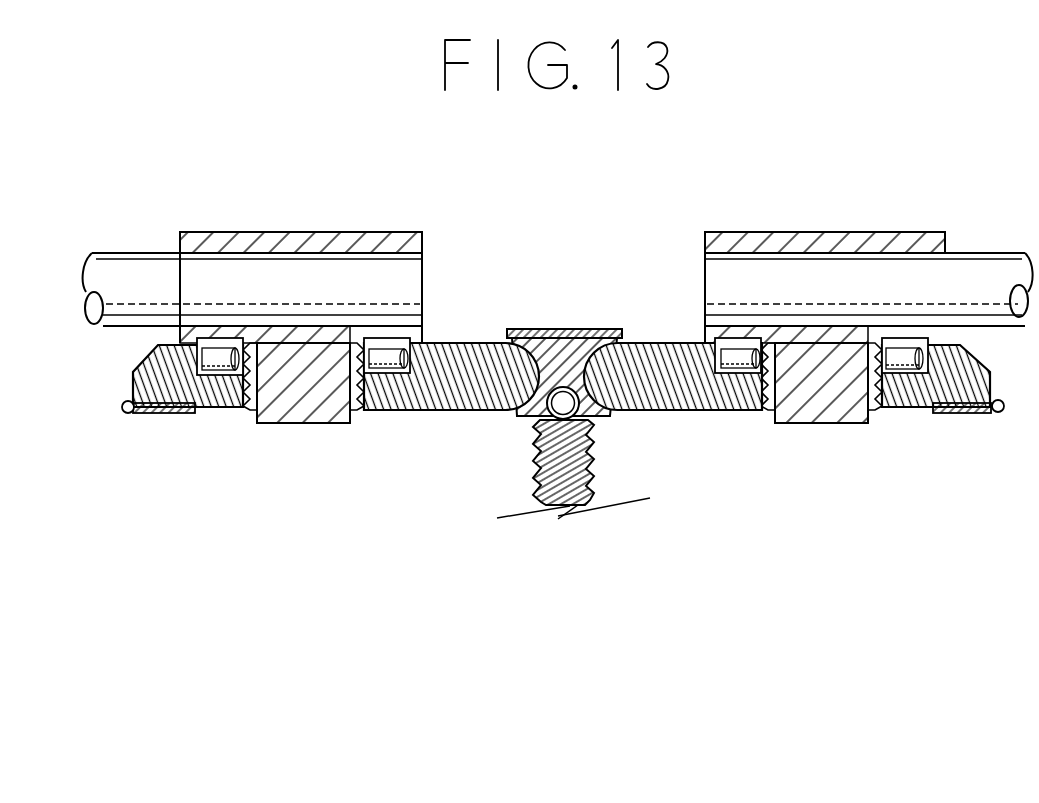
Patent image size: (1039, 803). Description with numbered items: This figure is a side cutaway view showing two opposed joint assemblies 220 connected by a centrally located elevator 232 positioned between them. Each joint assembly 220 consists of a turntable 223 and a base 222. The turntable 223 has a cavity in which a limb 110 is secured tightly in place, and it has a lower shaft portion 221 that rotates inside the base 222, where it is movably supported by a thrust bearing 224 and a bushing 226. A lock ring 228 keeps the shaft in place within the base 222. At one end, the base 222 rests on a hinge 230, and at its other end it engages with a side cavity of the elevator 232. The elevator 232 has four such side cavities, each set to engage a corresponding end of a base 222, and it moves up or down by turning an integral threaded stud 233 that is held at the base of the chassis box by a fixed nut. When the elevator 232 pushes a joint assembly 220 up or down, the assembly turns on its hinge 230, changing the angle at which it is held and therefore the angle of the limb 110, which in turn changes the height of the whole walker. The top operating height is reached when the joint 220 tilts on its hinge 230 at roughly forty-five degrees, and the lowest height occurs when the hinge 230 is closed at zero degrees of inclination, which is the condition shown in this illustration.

The limb 110 is at (142, 252).
The joint assembly 220 is at (333, 232).
The lower shaft portion 221 is at (283, 410).
The base 222 is at (513, 285).
The turntable 223 is at (423, 235).
The thrust bearing 224 is at (715, 414).
The bushing 226 is at (875, 408).
The lock ring 228 is at (257, 420).
The hinge 230 is at (140, 417).
The elevator 232 is at (570, 328).
The threaded stud 233 is at (533, 447).